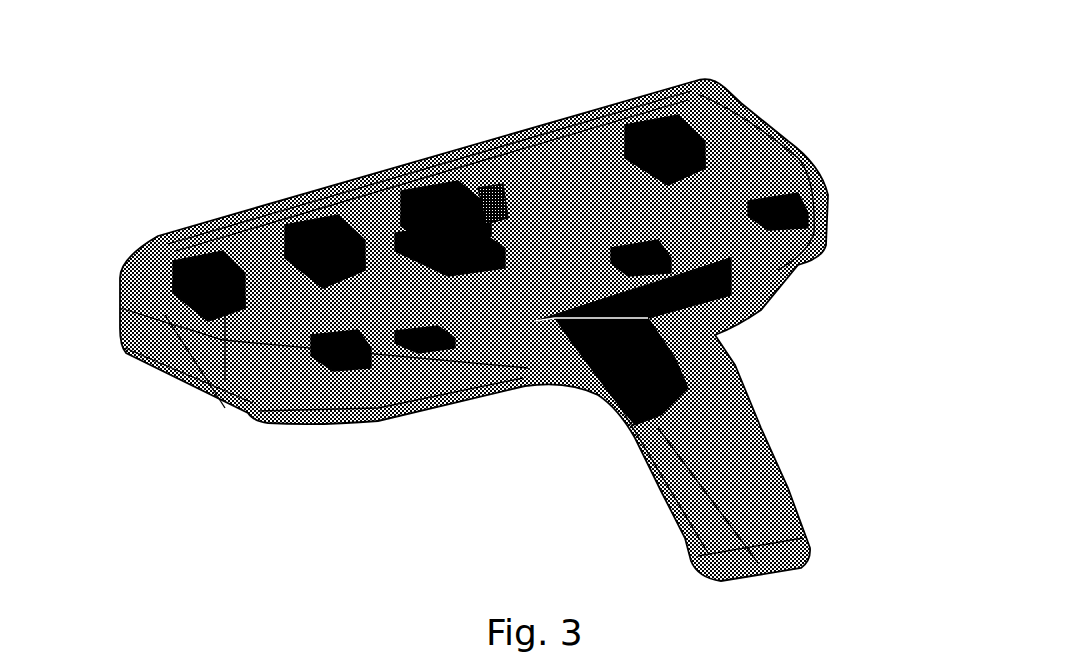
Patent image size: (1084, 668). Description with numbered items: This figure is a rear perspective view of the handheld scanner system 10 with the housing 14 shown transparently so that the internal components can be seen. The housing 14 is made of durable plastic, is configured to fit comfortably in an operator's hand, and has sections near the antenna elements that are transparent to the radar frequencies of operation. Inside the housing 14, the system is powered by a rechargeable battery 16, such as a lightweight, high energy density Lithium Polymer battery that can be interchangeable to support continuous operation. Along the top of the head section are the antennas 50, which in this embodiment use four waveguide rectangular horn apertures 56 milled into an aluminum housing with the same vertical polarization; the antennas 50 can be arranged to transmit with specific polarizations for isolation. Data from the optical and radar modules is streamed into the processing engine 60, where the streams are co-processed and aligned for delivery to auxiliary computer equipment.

The handheld scanner system 10 is at (485, 301).
The housing 14 is at (785, 155).
The rechargeable battery 16 is at (668, 336).
The antennas 50 is at (190, 255).
The apertures 56 is at (162, 258).
The processing engine 60 is at (480, 218).